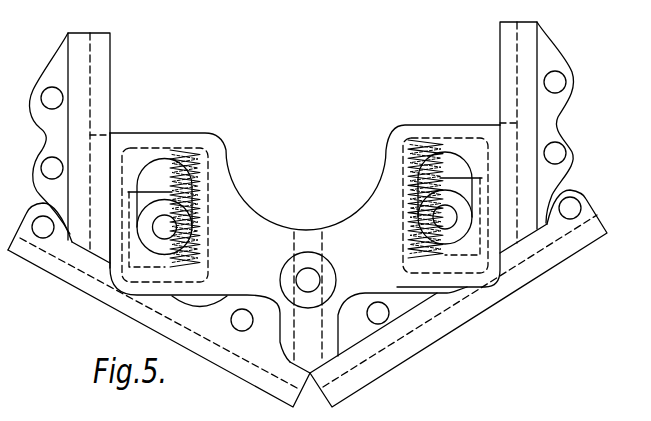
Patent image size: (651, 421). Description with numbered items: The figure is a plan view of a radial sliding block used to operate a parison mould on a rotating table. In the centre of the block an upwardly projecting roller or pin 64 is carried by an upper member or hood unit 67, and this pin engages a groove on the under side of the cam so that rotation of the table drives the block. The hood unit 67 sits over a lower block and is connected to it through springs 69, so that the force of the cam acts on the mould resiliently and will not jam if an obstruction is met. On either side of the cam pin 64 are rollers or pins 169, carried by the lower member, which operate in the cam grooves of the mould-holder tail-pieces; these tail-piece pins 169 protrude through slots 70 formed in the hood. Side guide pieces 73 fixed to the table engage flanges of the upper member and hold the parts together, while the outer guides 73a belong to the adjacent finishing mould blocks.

The cam-engaging pin or roller 64 is at (305, 280).
The upper member or hood unit 67 is at (272, 240).
The spring 69 is at (188, 150).
The slot 70 is at (462, 178).
The side guide piece 73 is at (93, 89).
The outer guide 73a is at (463, 307).
The tail-piece pin or roller 169 is at (412, 227).